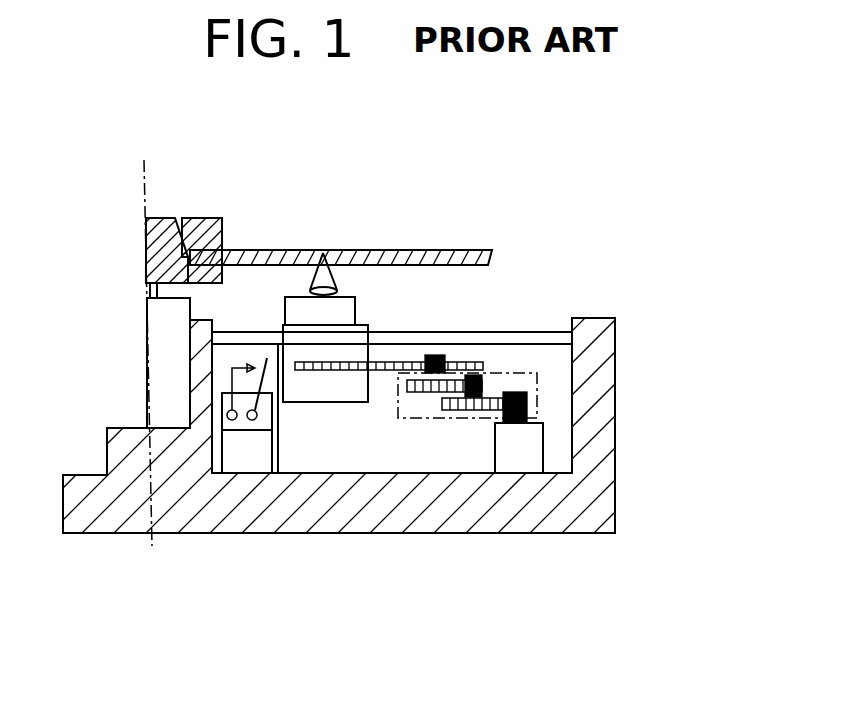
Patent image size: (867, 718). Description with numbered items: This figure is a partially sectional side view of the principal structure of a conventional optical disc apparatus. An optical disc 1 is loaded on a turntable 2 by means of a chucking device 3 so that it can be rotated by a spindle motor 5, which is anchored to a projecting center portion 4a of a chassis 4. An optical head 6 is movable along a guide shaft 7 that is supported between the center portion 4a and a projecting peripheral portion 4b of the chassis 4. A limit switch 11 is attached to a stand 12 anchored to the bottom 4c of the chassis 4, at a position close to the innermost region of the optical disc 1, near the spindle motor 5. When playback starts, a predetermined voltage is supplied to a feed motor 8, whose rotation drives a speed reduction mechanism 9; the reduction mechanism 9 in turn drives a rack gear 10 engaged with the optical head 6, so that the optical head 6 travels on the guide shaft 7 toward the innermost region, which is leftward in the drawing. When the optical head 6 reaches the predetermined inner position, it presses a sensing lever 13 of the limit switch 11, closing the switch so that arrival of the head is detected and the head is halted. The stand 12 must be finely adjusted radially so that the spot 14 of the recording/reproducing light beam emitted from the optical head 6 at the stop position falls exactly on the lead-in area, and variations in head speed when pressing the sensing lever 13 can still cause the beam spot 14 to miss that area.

The optical disc 1 is at (445, 250).
The turntable 2 is at (158, 218).
The chucking device 3 is at (212, 218).
The chassis 4 is at (598, 500).
The projecting center portion of the chassis 4a is at (172, 455).
The projecting peripheral portion of the chassis 4b is at (603, 403).
The bottom of the chassis 4c is at (463, 518).
The spindle motor 5 is at (160, 352).
The optical head 6 is at (352, 343).
The guide shaft 7 is at (547, 332).
The feed motor 8 is at (528, 448).
The speed reduction mechanism 9 is at (537, 375).
The rack gear 10 is at (408, 362).
The limit switch 11 is at (273, 412).
The stand 12 is at (250, 453).
The sensing lever 13 is at (267, 373).
The spot of the light beam 14 is at (323, 253).